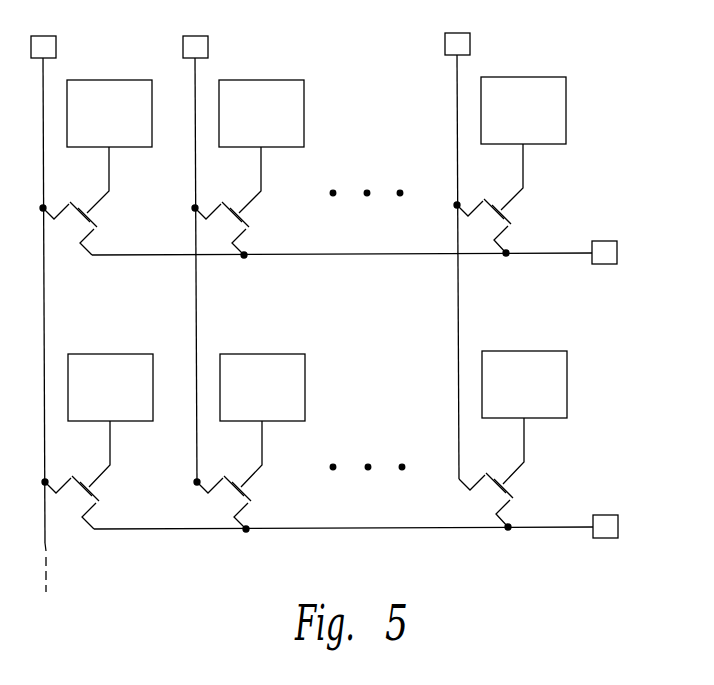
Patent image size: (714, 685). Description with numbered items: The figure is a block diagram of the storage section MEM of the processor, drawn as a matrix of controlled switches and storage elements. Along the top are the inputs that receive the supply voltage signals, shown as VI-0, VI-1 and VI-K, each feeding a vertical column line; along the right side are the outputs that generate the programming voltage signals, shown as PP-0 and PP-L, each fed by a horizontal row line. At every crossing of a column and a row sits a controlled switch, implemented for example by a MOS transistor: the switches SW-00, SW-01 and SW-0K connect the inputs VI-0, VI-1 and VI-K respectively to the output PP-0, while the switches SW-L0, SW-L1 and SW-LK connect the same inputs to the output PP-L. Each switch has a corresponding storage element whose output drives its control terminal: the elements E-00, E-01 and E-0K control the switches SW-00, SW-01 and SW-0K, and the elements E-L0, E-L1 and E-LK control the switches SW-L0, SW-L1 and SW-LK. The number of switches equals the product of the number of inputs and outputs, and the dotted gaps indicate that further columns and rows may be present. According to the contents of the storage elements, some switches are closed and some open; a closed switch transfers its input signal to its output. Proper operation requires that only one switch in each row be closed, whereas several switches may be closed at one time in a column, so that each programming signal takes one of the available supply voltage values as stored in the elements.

The supply voltage signal input VI-0 is at (43, 298).
The supply voltage signal input VI-1 is at (196, 243).
The supply voltage signal input VI-K is at (457, 239).
The storage element E-00 is at (109, 113).
The controlled switch SW-00 is at (82, 218).
The storage element E-01 is at (261, 113).
The controlled switch SW-01 is at (235, 218).
The storage element E-0K is at (523, 110).
The controlled switch SW-0K is at (496, 216).
The storage element E-L0 is at (110, 387).
The controlled switch SW-L0 is at (84, 493).
The storage element E-L1 is at (262, 387).
The controlled switch SW-L1 is at (237, 493).
The storage element E-LK is at (524, 384).
The controlled switch SW-LK is at (501, 490).
The programming voltage signal output PP-0 is at (383, 254).
The programming voltage signal output PP-L is at (384, 527).